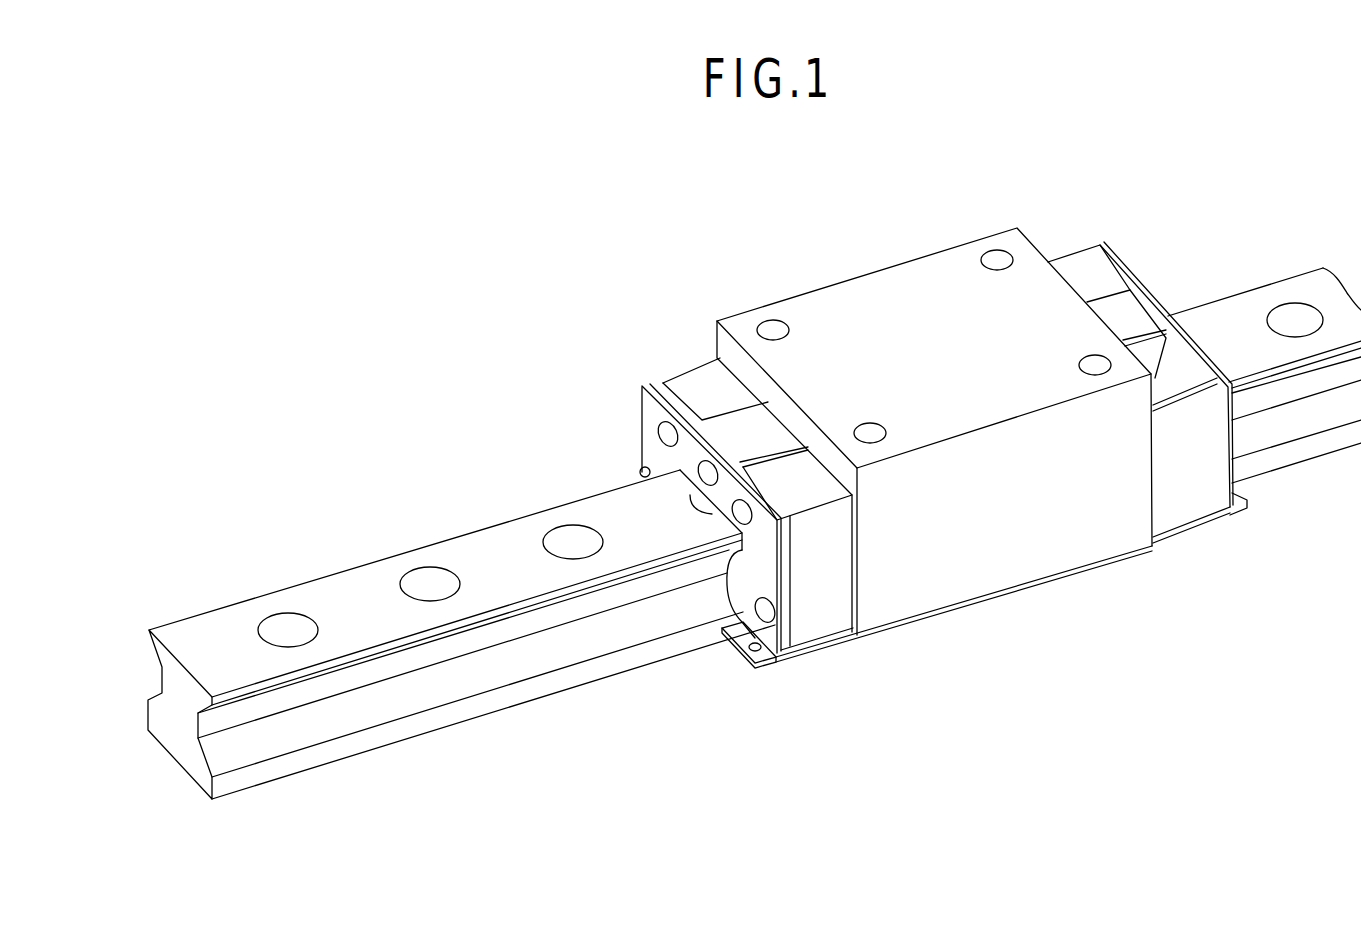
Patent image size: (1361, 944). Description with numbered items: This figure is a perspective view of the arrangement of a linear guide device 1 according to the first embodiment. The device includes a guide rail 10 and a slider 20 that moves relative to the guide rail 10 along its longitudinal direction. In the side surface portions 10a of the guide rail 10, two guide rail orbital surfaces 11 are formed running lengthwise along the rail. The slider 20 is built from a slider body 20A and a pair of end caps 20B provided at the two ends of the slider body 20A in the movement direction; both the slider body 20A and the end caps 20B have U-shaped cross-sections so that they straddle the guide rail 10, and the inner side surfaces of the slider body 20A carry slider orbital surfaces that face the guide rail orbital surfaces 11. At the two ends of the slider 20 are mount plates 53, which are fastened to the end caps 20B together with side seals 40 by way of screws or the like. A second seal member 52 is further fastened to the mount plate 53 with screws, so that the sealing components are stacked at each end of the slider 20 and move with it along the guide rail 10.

The linear guide device 1 is at (643, 253).
The guide rail 10 is at (347, 580).
The side surface portions 10a is at (387, 735).
The guide rail orbital surfaces 11 is at (287, 735).
The slider 20 is at (1032, 630).
The slider body 20A is at (830, 300).
The end caps 20B is at (825, 620).
The side seals 40 is at (660, 385).
The second seal member 52 is at (807, 657).
The mount plates 53 is at (648, 450).